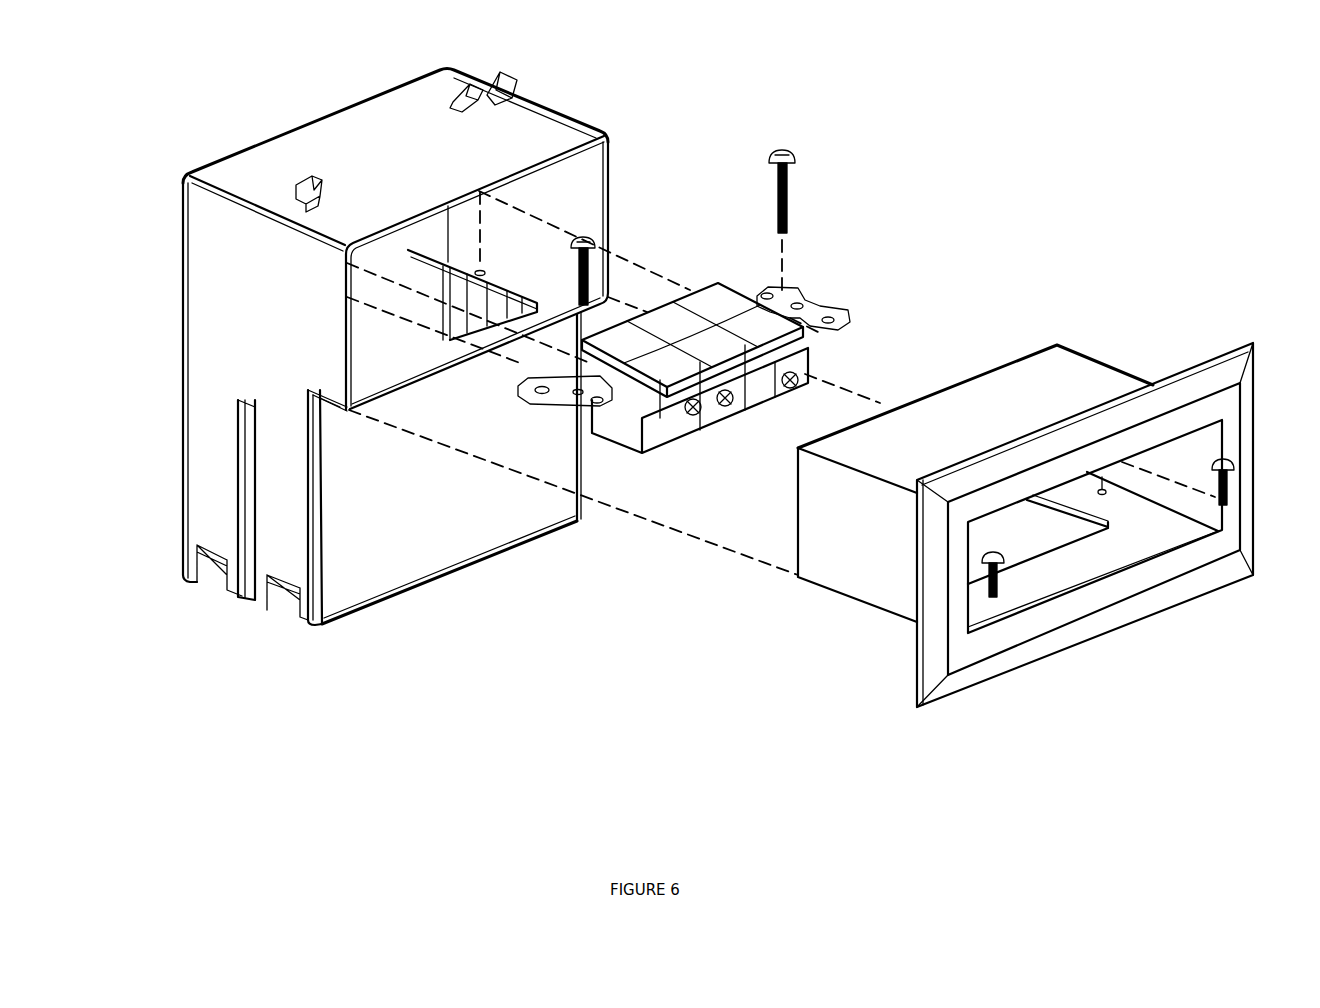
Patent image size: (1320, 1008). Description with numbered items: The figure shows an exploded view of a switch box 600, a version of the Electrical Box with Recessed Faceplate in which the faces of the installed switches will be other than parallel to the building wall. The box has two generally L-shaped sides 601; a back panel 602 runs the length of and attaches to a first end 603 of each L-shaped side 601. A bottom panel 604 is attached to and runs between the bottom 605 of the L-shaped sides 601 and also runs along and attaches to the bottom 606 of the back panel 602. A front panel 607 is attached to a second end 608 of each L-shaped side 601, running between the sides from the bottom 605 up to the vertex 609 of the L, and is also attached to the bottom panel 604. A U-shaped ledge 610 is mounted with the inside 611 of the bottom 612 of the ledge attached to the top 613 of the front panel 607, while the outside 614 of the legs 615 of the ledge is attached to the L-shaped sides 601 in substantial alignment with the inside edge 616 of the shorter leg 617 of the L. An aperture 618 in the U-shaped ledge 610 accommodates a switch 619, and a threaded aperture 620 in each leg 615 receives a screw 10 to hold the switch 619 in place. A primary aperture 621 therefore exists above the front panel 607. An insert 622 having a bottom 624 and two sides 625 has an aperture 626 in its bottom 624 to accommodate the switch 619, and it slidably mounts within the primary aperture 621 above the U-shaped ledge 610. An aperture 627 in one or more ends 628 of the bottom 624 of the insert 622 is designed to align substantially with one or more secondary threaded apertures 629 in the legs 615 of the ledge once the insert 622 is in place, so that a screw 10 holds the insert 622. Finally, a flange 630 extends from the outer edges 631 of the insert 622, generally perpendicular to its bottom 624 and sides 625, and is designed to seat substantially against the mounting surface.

The screw 10 is at (792, 192).
The switch box 600 is at (507, 577).
The L-shaped sides 601 is at (200, 263).
The back panel 602 is at (255, 147).
The first end 603 is at (183, 340).
The bottom panel 604 is at (365, 612).
The bottom 605 is at (258, 603).
The bottom 606 is at (188, 582).
The front panel 607 is at (397, 570).
The second end 608 is at (577, 507).
The vertex 609 is at (308, 390).
The U-shaped ledge 610 is at (415, 365).
The inside 611 is at (380, 370).
The bottom 612 is at (443, 358).
The top 613 is at (325, 405).
The outside 614 is at (520, 263).
The legs 615 is at (537, 288).
The inside edge 616 is at (603, 310).
The shorter leg 617 is at (320, 343).
The aperture 618 is at (410, 270).
The switch 619 is at (653, 440).
The threaded aperture 620 is at (478, 273).
The primary aperture 621 is at (372, 253).
The insert 622 is at (817, 620).
The bottom 624 is at (1043, 587).
The sides 625 is at (1208, 437).
The aperture 626 is at (1057, 530).
The aperture 627 is at (1100, 497).
The ends 628 is at (1120, 498).
The secondary threaded apertures 629 is at (493, 265).
The flange 630 is at (1070, 433).
The outer edges 631 is at (1003, 506).